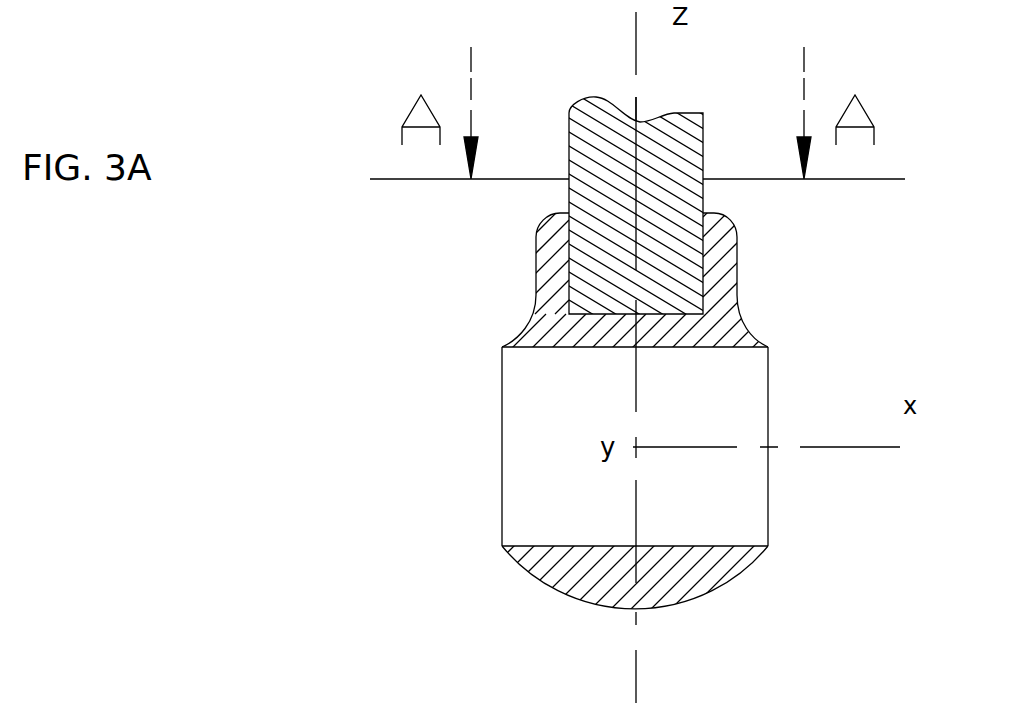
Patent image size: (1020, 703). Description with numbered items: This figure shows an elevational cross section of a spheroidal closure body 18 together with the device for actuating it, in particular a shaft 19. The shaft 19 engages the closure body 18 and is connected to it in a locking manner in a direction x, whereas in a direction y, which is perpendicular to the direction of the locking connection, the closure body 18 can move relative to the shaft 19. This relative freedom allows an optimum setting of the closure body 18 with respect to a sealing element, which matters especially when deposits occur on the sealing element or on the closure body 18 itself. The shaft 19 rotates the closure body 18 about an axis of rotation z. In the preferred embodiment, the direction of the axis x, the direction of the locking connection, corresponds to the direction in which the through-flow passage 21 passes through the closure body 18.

The closure body 18 is at (727, 326).
The shaft 19 is at (672, 143).
The through-flow passage 21 is at (700, 513).